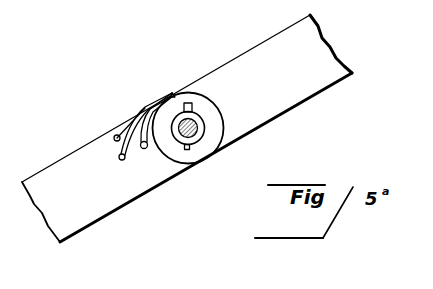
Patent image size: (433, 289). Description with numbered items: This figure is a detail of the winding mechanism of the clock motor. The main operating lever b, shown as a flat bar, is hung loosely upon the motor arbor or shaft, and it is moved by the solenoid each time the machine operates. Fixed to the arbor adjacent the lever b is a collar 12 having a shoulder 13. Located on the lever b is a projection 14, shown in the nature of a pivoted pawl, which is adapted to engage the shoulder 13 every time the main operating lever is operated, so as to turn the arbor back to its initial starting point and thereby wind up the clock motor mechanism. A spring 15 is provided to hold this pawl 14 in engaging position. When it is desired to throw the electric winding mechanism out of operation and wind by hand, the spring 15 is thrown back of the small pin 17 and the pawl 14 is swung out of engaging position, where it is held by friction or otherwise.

The main operating lever b is at (187, 128).
The collar 12 is at (215, 118).
The shoulder 13 is at (172, 93).
The projection 14 is at (140, 150).
The spring 15 is at (130, 123).
The small pin 17 is at (113, 137).